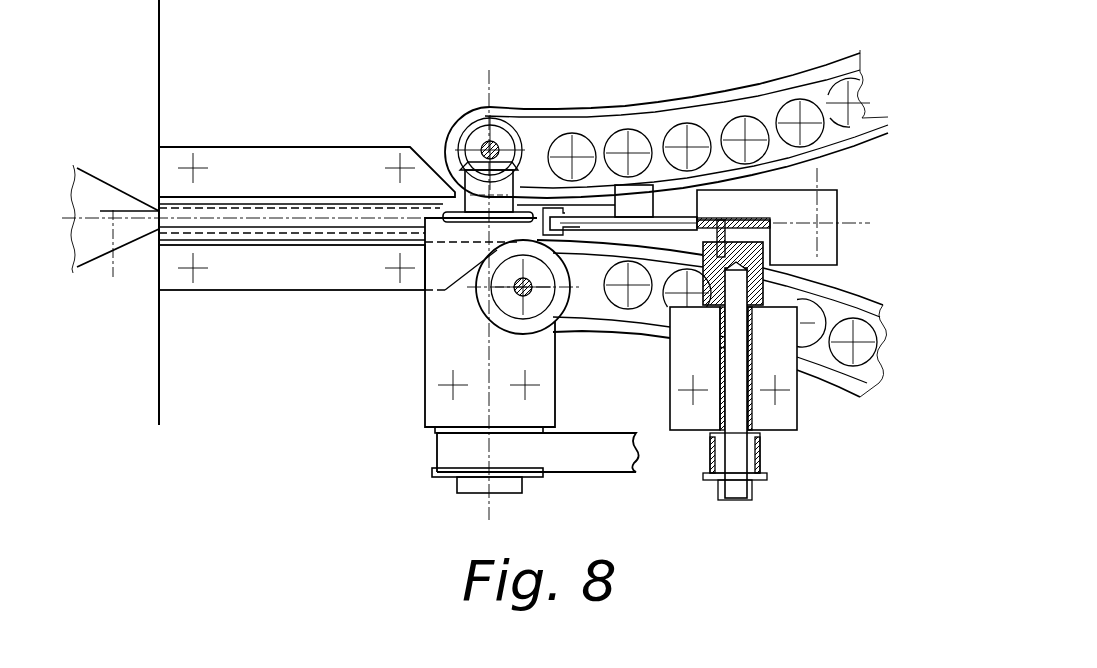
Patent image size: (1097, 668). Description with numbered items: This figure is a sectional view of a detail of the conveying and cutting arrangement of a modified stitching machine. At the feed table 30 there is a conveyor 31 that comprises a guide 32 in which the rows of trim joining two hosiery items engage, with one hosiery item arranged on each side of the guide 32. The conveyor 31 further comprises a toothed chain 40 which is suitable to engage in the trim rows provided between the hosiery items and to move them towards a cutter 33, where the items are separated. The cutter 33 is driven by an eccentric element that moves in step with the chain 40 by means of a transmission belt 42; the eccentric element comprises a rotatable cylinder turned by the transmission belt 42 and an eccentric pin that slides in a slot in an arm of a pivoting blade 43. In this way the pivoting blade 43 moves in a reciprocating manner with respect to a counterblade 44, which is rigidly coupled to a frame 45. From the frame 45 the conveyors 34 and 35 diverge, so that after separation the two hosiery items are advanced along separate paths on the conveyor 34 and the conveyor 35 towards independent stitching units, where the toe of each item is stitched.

The feed table 30 is at (133, 113).
The conveyor 31 is at (289, 138).
The guide 32 is at (90, 185).
The cutter 33 is at (800, 442).
The conveyor 34 is at (720, 90).
The conveyor 35 is at (843, 282).
The toothed chain 40 is at (259, 284).
The transmission belt 42 is at (597, 458).
The pivoting blade 43 is at (641, 230).
The counterblade 44 is at (585, 217).
The frame 45 is at (838, 200).